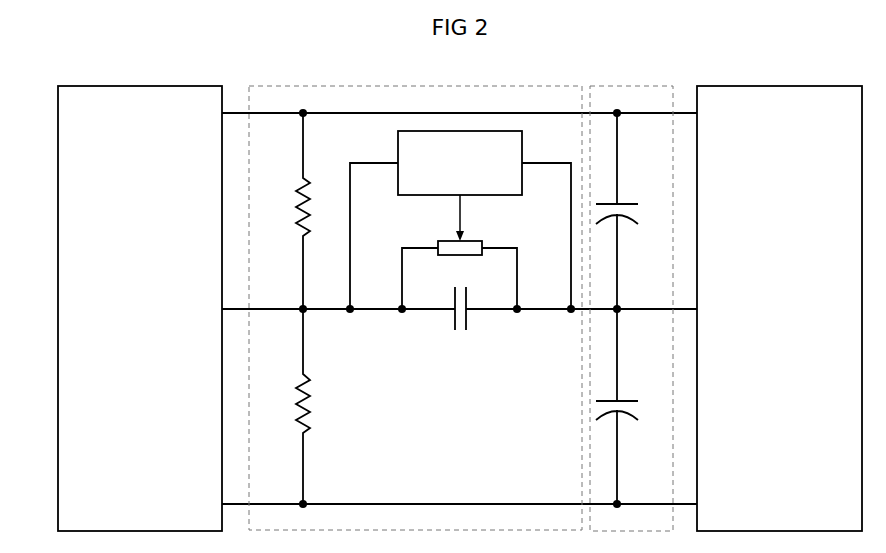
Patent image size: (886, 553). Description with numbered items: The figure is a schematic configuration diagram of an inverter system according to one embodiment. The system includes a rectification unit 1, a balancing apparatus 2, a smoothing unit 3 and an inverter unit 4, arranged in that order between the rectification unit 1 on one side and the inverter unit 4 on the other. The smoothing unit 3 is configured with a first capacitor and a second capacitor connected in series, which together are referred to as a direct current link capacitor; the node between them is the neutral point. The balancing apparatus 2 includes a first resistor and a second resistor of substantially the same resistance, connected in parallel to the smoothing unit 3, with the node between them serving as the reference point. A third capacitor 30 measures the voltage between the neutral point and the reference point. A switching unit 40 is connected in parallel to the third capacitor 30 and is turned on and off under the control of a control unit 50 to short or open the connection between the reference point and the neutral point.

The rectification unit 1 is at (180, 86).
The balancing apparatus 2 is at (415, 292).
The smoothing unit 3 is at (640, 86).
The inverter unit 4 is at (820, 86).
The third capacitor 30 is at (468, 320).
The switching unit 40 is at (483, 241).
The control unit 50 is at (522, 147).